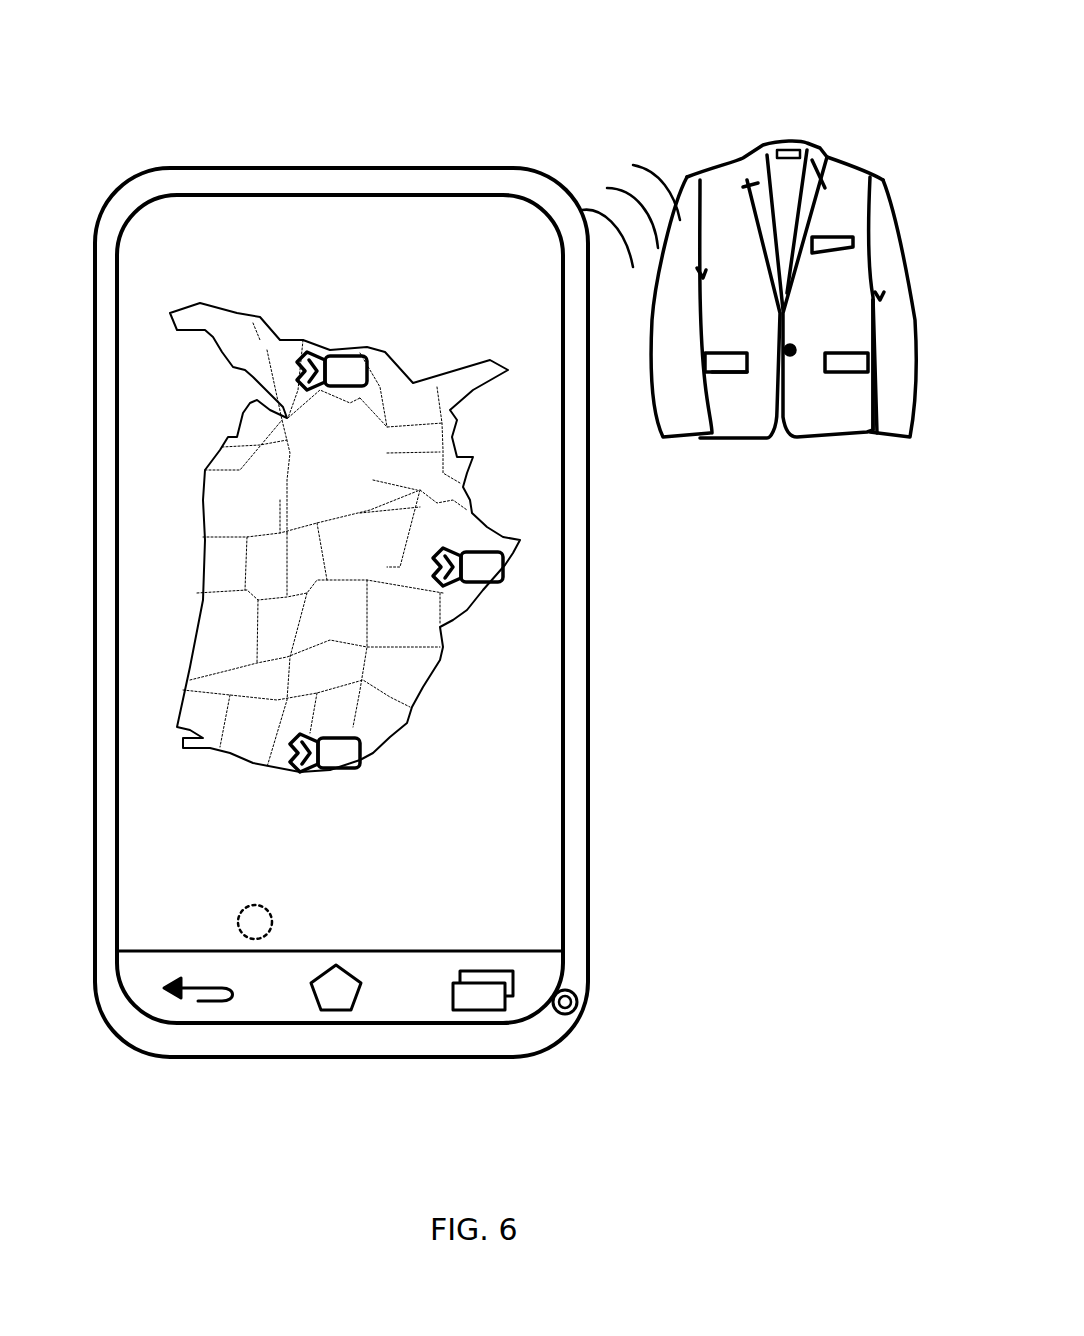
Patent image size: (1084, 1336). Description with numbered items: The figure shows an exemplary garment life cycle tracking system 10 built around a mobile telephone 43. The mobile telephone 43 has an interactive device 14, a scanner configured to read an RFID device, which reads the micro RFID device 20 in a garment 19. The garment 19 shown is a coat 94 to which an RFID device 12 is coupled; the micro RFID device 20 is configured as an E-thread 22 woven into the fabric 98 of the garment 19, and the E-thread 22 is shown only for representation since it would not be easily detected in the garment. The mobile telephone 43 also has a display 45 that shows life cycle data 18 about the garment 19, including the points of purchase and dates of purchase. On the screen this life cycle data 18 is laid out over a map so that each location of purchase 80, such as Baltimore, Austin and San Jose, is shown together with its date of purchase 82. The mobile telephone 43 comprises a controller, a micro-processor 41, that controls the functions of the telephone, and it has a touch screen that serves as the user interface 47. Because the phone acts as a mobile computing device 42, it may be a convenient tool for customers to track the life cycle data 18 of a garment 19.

The garment life cycle tracking system 10 is at (408, 141).
The RFID device 12 is at (790, 142).
The interactive device 14 is at (580, 990).
The life cycle data 18 is at (210, 321).
The garment 19 is at (843, 167).
The micro RFID device 20 is at (718, 365).
The E-thread 22 is at (730, 370).
The micro-processor 41 is at (235, 923).
The mobile computing device 42 is at (550, 880).
The mobile telephone 43 is at (542, 737).
The display 45 is at (568, 662).
The user interface 47 is at (528, 813).
The location of purchase 80 is at (335, 752).
The date of purchase 82 is at (497, 702).
The coat 94 is at (720, 187).
The fabric 98 is at (848, 288).